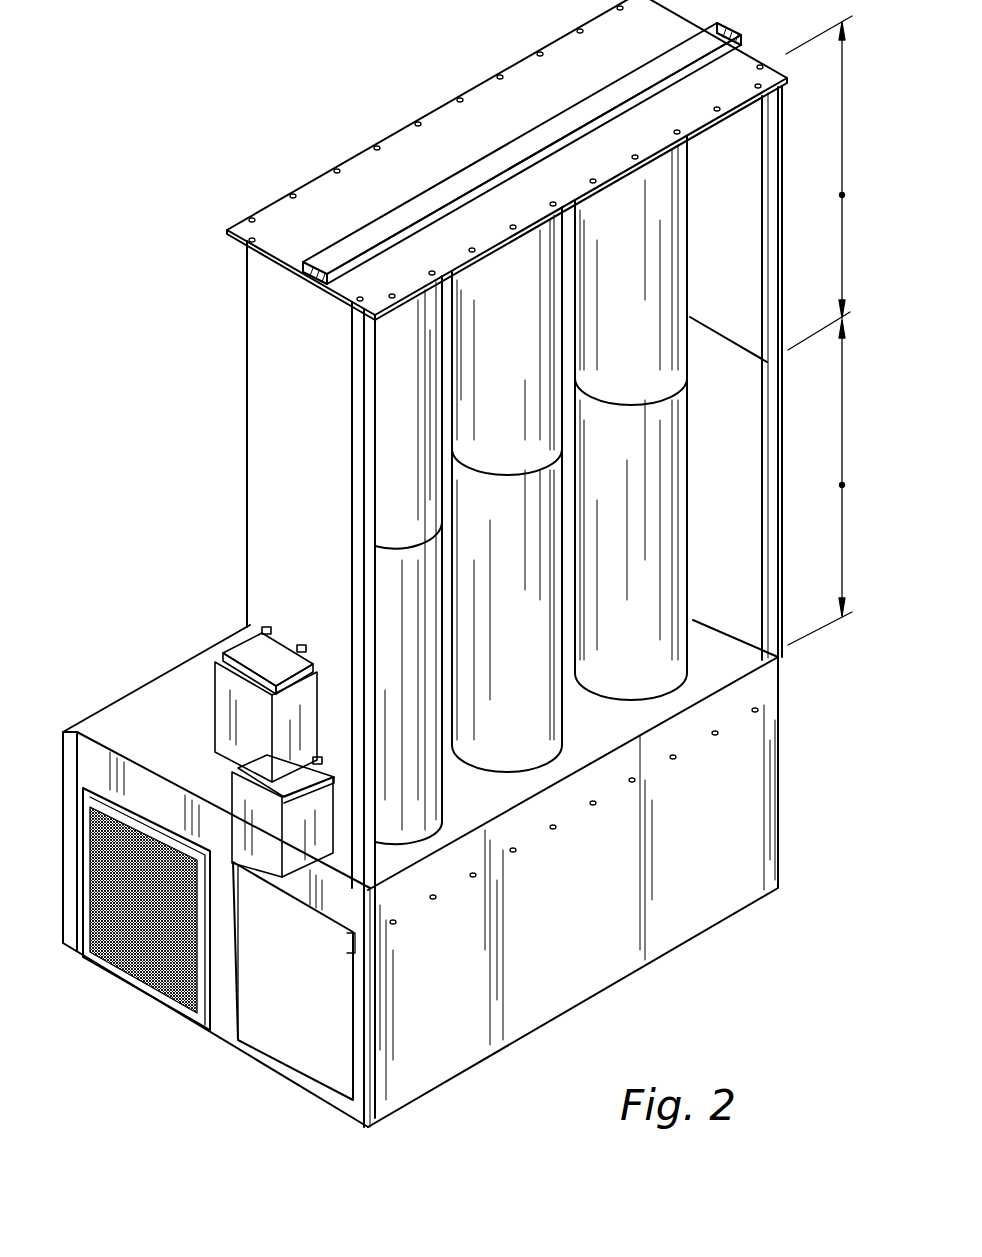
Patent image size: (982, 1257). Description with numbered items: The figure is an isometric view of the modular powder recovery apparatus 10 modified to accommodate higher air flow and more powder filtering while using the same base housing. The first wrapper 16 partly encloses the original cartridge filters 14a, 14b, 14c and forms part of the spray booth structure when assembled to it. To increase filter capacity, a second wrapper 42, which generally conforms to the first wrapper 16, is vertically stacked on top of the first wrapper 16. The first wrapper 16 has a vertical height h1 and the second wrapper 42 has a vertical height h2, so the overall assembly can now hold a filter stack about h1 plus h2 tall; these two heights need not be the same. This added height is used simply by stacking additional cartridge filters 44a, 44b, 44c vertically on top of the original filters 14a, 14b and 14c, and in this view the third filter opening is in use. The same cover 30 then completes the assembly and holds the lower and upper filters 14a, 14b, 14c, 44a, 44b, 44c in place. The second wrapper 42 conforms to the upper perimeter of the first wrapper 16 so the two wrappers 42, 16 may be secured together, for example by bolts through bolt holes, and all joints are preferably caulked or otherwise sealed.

The powder recovery apparatus 10 is at (444, 563).
The cover 30 is at (538, 83).
The second wrapper 42 is at (782, 183).
The additional cartridge filter 44a is at (428, 376).
The additional cartridge filter 44b is at (552, 306).
The additional cartridge filter 44c is at (677, 231).
The cartridge filter 14a is at (430, 696).
The cartridge filter 14b is at (552, 624).
The cartridge filter 14c is at (677, 552).
The wrapper 16 is at (782, 593).
The vertical height of first wrapper h1 is at (842, 485).
The vertical height of second wrapper h2 is at (842, 195).